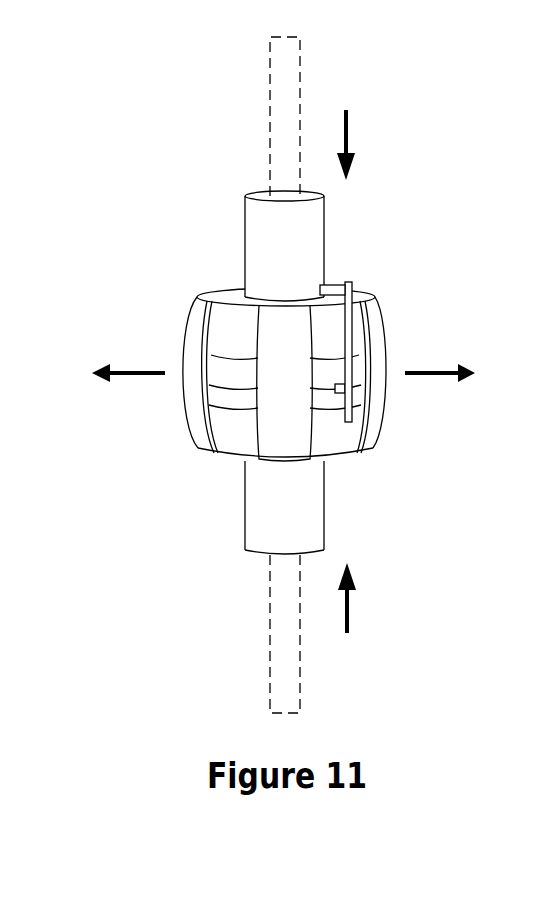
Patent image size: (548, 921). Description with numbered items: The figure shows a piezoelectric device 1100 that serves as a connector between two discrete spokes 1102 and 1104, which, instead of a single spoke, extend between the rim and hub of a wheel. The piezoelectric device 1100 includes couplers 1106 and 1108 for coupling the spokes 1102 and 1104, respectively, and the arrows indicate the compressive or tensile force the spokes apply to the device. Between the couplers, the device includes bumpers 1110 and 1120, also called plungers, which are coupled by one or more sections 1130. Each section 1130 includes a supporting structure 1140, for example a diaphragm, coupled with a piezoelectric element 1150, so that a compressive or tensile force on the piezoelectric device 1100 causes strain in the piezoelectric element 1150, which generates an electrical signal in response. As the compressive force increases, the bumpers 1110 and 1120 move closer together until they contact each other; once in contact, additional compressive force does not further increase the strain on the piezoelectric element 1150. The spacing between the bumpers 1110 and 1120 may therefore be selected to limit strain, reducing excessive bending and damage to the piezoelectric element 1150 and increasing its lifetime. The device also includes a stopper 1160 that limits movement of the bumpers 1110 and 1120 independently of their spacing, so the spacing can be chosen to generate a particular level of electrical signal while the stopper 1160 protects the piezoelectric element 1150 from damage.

The piezoelectric device 1100 is at (143, 90).
The spoke 1102 is at (275, 147).
The spoke 1104 is at (277, 628).
The coupler 1106 is at (253, 243).
The coupler 1108 is at (252, 525).
The bumper 1110 is at (222, 338).
The bumper 1120 is at (242, 448).
The section 1130 is at (373, 425).
The supporting structure 1140 is at (370, 325).
The piezoelectric element 1150 is at (362, 445).
The stopper 1160 is at (352, 288).